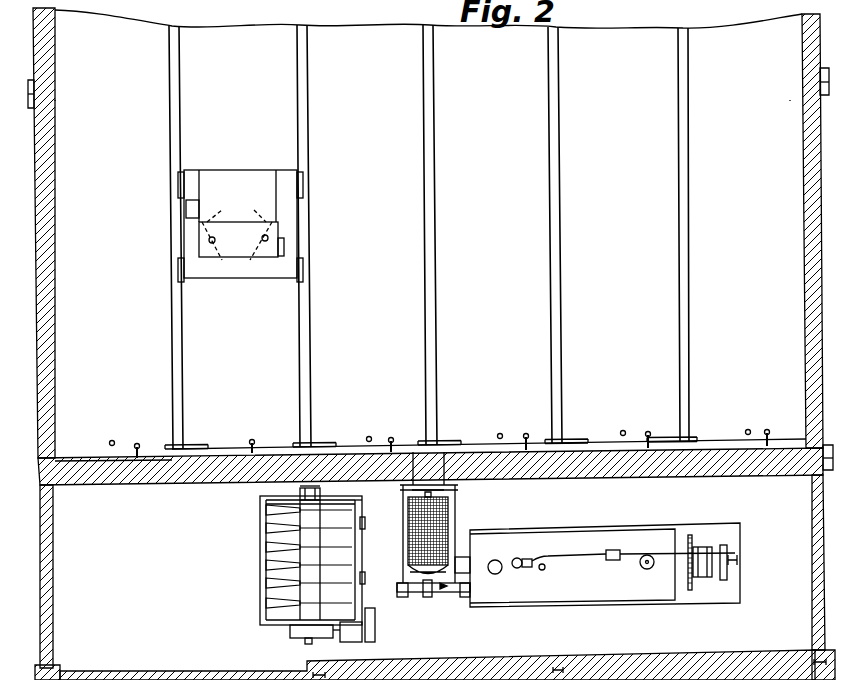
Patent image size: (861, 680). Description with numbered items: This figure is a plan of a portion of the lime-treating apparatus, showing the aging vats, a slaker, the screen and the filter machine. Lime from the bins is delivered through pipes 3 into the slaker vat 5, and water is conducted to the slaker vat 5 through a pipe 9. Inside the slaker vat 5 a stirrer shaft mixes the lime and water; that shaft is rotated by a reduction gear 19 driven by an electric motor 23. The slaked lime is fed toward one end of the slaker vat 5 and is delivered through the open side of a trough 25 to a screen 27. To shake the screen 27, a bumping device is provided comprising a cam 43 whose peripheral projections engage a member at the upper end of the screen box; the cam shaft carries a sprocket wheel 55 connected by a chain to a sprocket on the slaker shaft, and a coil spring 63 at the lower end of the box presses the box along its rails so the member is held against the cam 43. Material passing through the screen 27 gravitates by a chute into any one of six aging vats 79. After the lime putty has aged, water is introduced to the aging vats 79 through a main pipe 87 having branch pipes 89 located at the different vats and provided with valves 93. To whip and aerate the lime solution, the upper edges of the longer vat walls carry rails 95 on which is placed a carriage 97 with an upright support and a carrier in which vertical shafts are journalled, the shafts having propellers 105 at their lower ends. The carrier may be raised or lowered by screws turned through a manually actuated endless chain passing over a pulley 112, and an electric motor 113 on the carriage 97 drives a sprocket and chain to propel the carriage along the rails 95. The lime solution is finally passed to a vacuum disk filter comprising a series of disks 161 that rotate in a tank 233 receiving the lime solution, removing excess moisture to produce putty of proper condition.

The pipe 3 is at (500, 560).
The slaker vat 5 is at (640, 529).
The pipe 9 is at (568, 556).
The reduction gear 19 is at (692, 542).
The electric motor 23 is at (705, 548).
The trough 25 is at (430, 568).
The screen 27 is at (440, 505).
The cam 43 is at (433, 555).
The sprocket wheel 55 is at (448, 598).
The coil spring 63 is at (376, 502).
The aging vat 79 is at (422, 205).
The main pipe 87 is at (103, 458).
The branch pipe 89 is at (140, 453).
The valve 93 is at (139, 444).
The rail 95 is at (170, 301).
The carriage 97 is at (287, 206).
The propeller 105 is at (236, 213).
The pulley 112 is at (285, 249).
The electric motor 113 is at (199, 207).
The disk 161 is at (347, 562).
The tank 233 is at (345, 500).